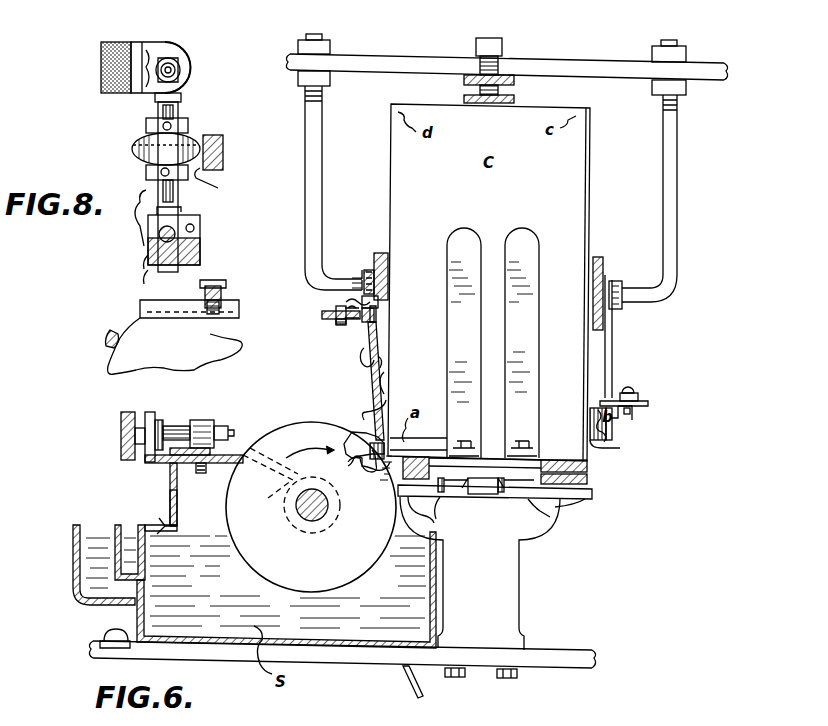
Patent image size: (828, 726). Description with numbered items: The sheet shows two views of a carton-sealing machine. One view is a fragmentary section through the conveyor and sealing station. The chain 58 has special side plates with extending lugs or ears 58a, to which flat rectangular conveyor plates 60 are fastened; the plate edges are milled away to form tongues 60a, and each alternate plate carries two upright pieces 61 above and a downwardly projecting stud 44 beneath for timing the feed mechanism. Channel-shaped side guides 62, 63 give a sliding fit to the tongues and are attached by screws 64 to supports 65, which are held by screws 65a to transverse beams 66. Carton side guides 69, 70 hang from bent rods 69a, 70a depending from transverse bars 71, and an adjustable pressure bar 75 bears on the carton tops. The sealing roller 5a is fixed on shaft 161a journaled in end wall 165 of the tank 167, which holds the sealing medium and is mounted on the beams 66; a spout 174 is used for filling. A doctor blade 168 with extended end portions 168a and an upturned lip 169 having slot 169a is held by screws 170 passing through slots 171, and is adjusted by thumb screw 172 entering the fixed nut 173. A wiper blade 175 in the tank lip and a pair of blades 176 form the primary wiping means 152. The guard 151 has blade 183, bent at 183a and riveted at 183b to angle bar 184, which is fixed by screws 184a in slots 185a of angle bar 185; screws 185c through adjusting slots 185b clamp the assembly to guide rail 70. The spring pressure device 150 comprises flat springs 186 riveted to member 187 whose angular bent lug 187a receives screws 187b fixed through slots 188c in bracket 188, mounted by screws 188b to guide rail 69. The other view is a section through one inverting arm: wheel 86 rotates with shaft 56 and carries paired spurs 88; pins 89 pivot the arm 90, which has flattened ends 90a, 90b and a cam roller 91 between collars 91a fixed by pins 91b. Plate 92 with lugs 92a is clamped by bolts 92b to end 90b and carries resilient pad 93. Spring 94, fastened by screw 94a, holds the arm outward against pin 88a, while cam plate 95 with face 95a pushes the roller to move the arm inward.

In FIG. 8, the pads 93 is at (101, 49).
In FIG. 8, the plates 92 is at (138, 42).
In FIG. 8, the lugs 92a is at (185, 49).
In FIG. 8, the bolts 92b is at (185, 68).
In FIG. 8, the flattened end portion 90b is at (181, 97).
In FIG. 8, the arms 90 is at (179, 195).
In FIG. 8, the collars 91a is at (146, 125).
In FIG. 8, the pins 91b is at (170, 126).
In FIG. 8, the cam rollers 91 is at (132, 147).
In FIG. 8, the cam plate 95 is at (226, 146).
In FIG. 8, the face of cam track 95a is at (218, 176).
In FIG. 8, the springs 94 is at (132, 219).
In FIG. 8, the spurs 88 is at (198, 247).
In FIG. 8, the pins 88a is at (200, 229).
In FIG. 8, the flattened end portion 90a is at (182, 210).
In FIG. 8, the pins 89 is at (158, 236).
In FIG. 8, the screws 94a is at (142, 270).
In FIG. 8, the wheel 86 is at (206, 280).
In FIG. 8, the shaft 56 is at (118, 335).
In FIG. 6, the transverse bars 71 is at (556, 60).
In FIG. 6, the bent rod 70a is at (316, 168).
In FIG. 6, the side guide 70 is at (382, 242).
In FIG. 6, the adjustable pressure bar 75 is at (521, 103).
In FIG. 6, the bent rod 69a is at (675, 174).
In FIG. 6, the screws 188b is at (650, 286).
In FIG. 6, the upright pieces 61 is at (450, 232).
In FIG. 6, the conveyor plates 60 is at (494, 458).
In FIG. 6, the tongues 60a is at (432, 445).
In FIG. 6, the side guide 63 is at (408, 462).
In FIG. 6, the side guide 62 is at (570, 468).
In FIG. 6, the screws 64 is at (571, 502).
In FIG. 6, the chain 58 is at (484, 498).
In FIG. 6, the lugs or ears 58a is at (547, 515).
In FIG. 6, the stud 44 is at (442, 512).
In FIG. 6, the supports 65 is at (520, 584).
In FIG. 6, the transverse bars or beams 66 is at (598, 648).
In FIG. 6, the screws 65a is at (506, 677).
In FIG. 6, the side guide 69 is at (598, 258).
In FIG. 6, the bracket 188 is at (620, 328).
In FIG. 6, the screws 187b is at (636, 385).
In FIG. 6, the slots 188c is at (638, 398).
In FIG. 6, the angular bent lug 187a is at (638, 400).
In FIG. 6, the member 187 is at (633, 416).
In FIG. 6, the spring pressure device 150 is at (620, 426).
In FIG. 6, the flat springs 186 is at (611, 446).
In FIG. 6, the screws 185c is at (374, 258).
In FIG. 6, the adjusting slots 185b is at (384, 278).
In FIG. 6, the slots 185a is at (381, 300).
In FIG. 6, the screws 184a is at (346, 304).
In FIG. 6, the angle bar 185 is at (342, 320).
In FIG. 6, the angle bar 184 is at (368, 330).
In FIG. 6, the rivets 183b is at (372, 355).
In FIG. 6, the bend 183a is at (382, 372).
In FIG. 6, the blade 183 is at (380, 402).
In FIG. 6, the guard 151 is at (379, 395).
In FIG. 6, the blades 176 is at (350, 448).
In FIG. 6, the primary wiping means 152 is at (347, 464).
In FIG. 6, the wiper blade 175 is at (364, 481).
In FIG. 6, the sealing roller 5a is at (288, 434).
In FIG. 6, the shaft 161a is at (316, 512).
In FIG. 6, the extended end portions 168a is at (264, 481).
In FIG. 6, the thumb screw 172 is at (120, 430).
In FIG. 6, the slot 169a is at (154, 414).
In FIG. 6, the fixed nut 173 is at (208, 418).
In FIG. 6, the slots 171 is at (214, 442).
In FIG. 6, the upturned lip 169 is at (148, 458).
In FIG. 6, the doctor blade 168 is at (168, 480).
In FIG. 6, the screws 170 is at (202, 467).
In FIG. 6, the end wall 165 is at (196, 503).
In FIG. 6, the tank 167 is at (184, 534).
In FIG. 6, the spout 174 is at (90, 580).